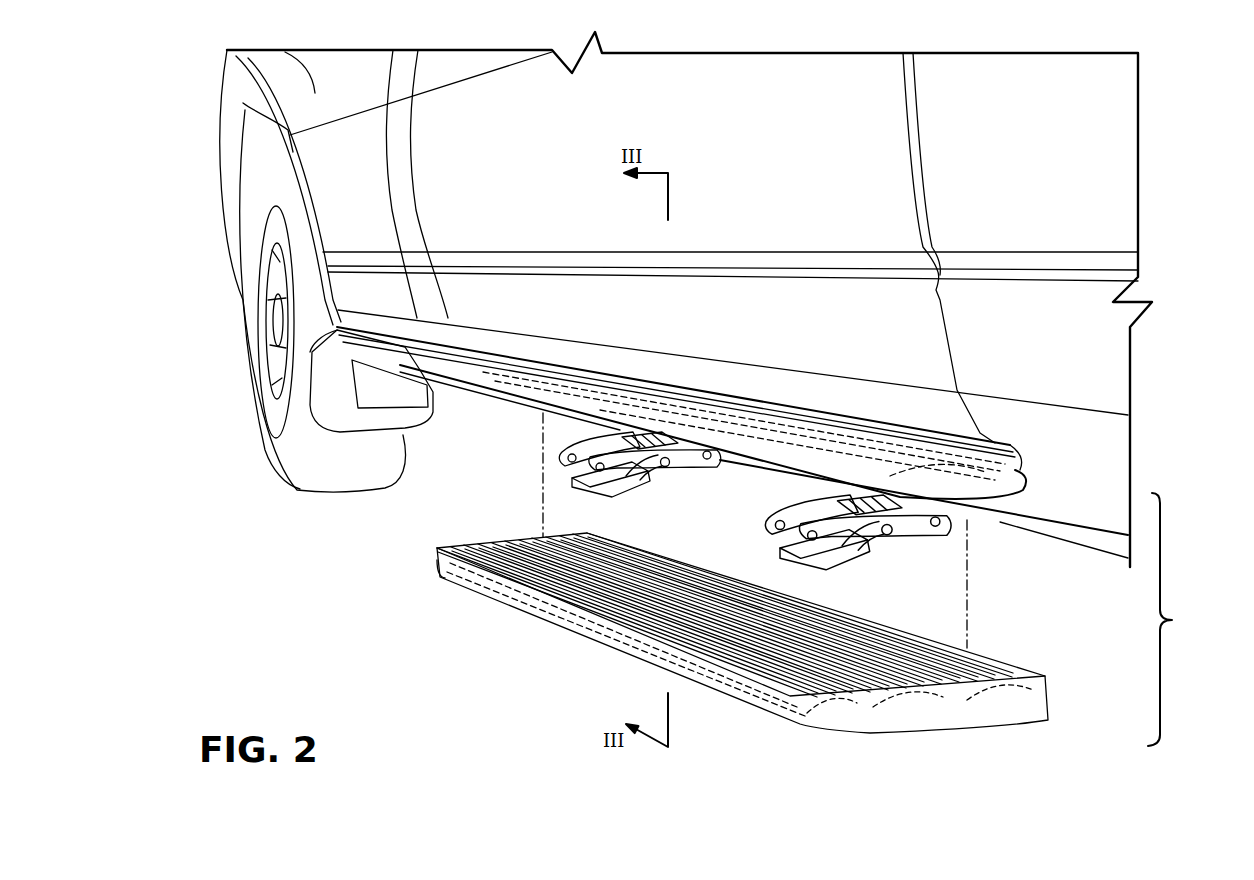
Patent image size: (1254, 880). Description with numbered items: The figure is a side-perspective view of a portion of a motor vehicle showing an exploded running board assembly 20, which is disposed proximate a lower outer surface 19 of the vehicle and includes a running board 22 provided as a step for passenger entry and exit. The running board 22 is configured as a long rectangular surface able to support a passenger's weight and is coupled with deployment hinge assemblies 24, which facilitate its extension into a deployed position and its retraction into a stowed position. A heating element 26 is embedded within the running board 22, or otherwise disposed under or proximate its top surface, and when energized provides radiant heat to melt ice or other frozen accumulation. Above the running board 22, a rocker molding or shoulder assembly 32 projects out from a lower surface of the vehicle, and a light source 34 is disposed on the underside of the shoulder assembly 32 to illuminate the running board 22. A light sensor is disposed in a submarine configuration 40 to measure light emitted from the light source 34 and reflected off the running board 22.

The lower outer surface 19 is at (528, 408).
The running board assembly 20 is at (1179, 619).
The running board 22 is at (742, 658).
The deployment hinge assemblies 24 is at (678, 462).
The heating element 26 is at (593, 620).
The shoulder assembly 32 is at (987, 480).
The light source 34 is at (750, 445).
The submarine configuration 40 is at (967, 473).